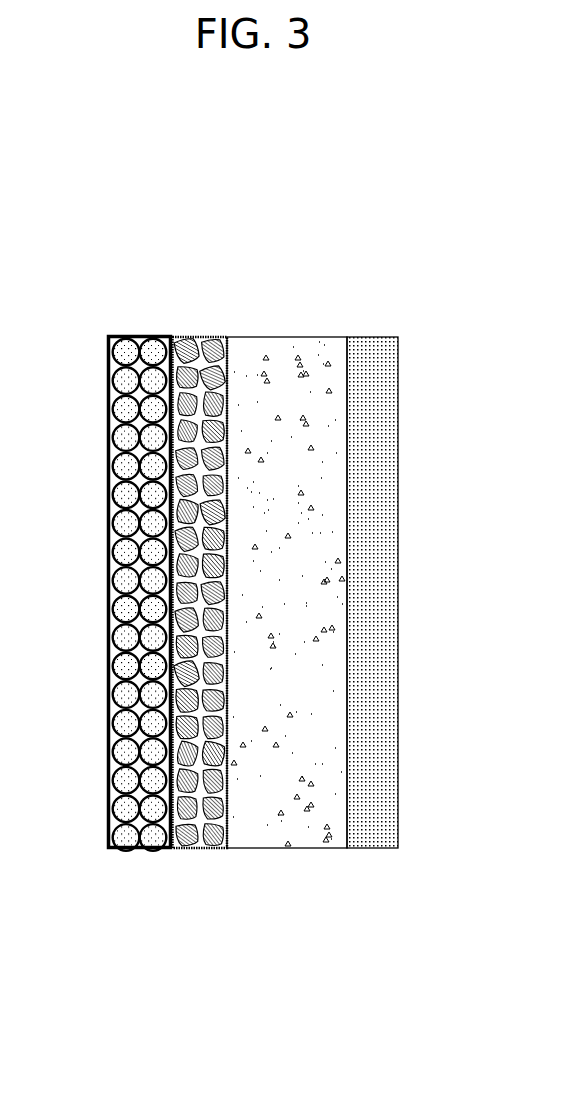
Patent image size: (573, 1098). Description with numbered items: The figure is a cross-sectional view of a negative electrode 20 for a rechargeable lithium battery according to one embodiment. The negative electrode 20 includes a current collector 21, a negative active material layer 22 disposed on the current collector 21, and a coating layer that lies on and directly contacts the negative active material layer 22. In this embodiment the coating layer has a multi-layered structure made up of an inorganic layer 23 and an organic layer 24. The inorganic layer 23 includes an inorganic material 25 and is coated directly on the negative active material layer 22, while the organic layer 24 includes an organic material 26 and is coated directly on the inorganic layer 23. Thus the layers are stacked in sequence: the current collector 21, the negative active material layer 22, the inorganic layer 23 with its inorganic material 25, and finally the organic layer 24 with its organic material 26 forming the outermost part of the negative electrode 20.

The negative electrode 20 is at (275, 220).
The current collector 21 is at (369, 336).
The negative active material layer 22 is at (284, 336).
The inorganic layer 23 is at (198, 336).
The organic layer 24 is at (138, 336).
The inorganic material 25 is at (212, 816).
The organic material 26 is at (122, 808).